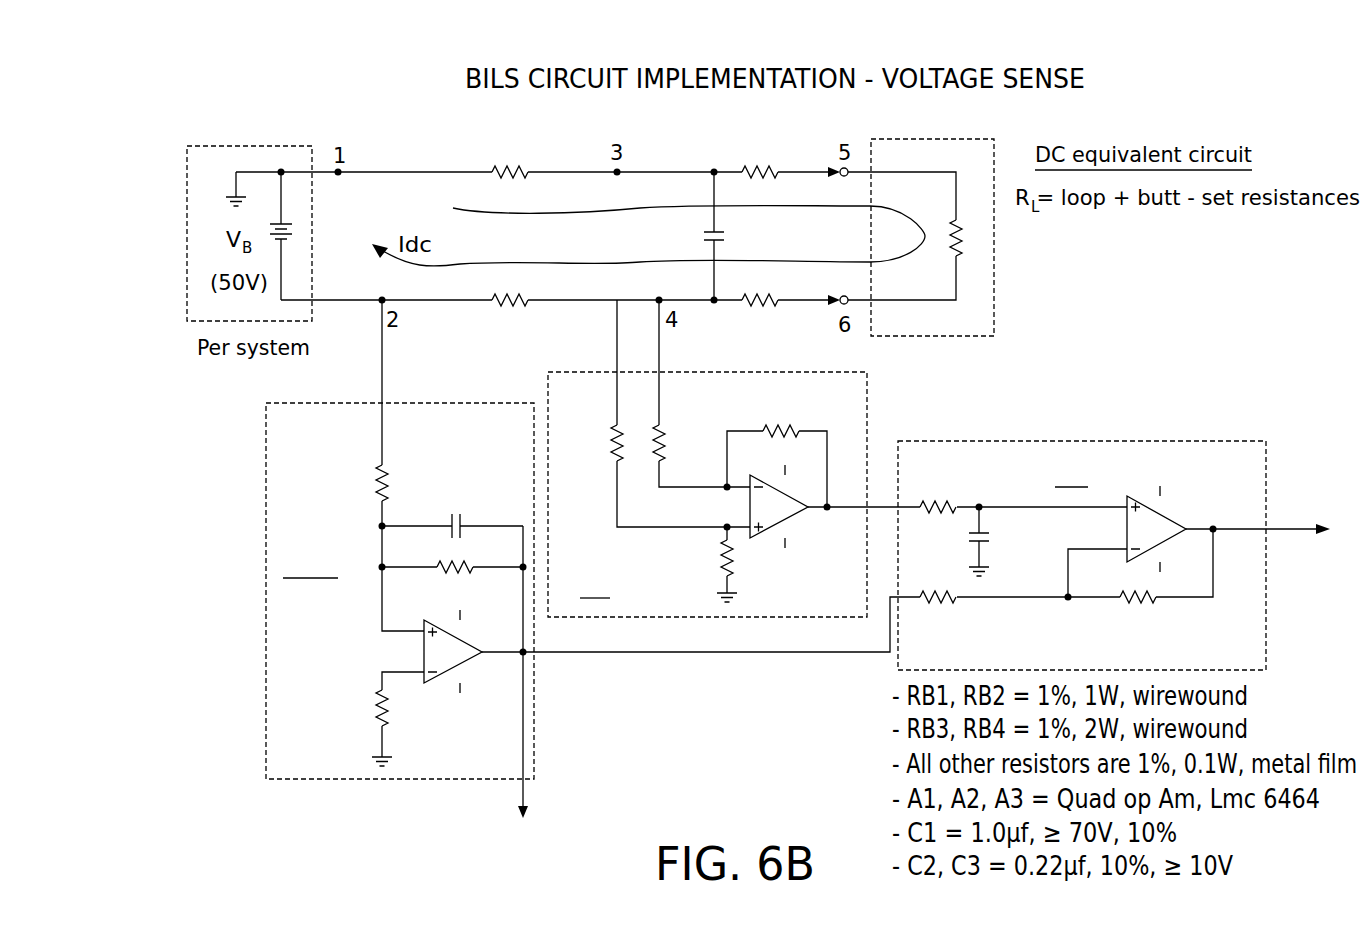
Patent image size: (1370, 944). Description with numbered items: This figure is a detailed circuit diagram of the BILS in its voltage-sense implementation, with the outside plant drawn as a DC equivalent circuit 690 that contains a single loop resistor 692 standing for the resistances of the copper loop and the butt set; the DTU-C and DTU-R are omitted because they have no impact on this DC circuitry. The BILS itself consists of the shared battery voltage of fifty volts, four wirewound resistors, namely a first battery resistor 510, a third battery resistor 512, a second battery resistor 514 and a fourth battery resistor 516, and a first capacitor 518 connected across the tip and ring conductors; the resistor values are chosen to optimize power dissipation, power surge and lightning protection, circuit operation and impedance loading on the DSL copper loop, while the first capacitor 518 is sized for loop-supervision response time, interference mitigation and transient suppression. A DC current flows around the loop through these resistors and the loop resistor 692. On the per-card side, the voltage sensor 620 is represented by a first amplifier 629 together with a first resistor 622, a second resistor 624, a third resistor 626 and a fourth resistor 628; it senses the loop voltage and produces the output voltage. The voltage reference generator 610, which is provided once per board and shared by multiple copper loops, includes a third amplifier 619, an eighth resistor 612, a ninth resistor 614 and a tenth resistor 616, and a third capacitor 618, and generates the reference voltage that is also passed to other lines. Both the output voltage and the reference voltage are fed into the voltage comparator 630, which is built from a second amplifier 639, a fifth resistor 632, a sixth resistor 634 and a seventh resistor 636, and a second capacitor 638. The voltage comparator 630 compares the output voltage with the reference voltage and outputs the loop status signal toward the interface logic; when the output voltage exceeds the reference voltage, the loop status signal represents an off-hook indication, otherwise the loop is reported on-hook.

The resistor R_b1 510 is at (528, 170).
The resistor R_b3 512 is at (778, 170).
The resistor R_b2 514 is at (528, 302).
The resistor R_b4 516 is at (777, 302).
The capacitor C_1 518 is at (704, 240).
The voltage reference generator VRG 610 is at (266, 578).
The resistor R_8 612 is at (388, 710).
The resistor R_9 614 is at (382, 470).
The resistor R_10 616 is at (452, 568).
The capacitor C_3 618 is at (452, 522).
The amplifier A3 619 is at (424, 652).
The voltage sensor VS 620 is at (867, 405).
The resistor R_1 622 is at (615, 460).
The resistor R_2 624 is at (656, 440).
The resistor R_3 626 is at (781, 428).
The resistor R_4 628 is at (733, 572).
The amplifier A1 629 is at (750, 507).
The voltage comparator VC 630 is at (1186, 441).
The resistor R_5 632 is at (1156, 600).
The resistor R_6 634 is at (958, 600).
The resistor R_7 636 is at (955, 504).
The capacitor C_2 638 is at (990, 542).
The amplifier A_2 639 is at (1127, 529).
The equivalent circuit 690 is at (973, 255).
The resistor R_L 692 is at (958, 254).